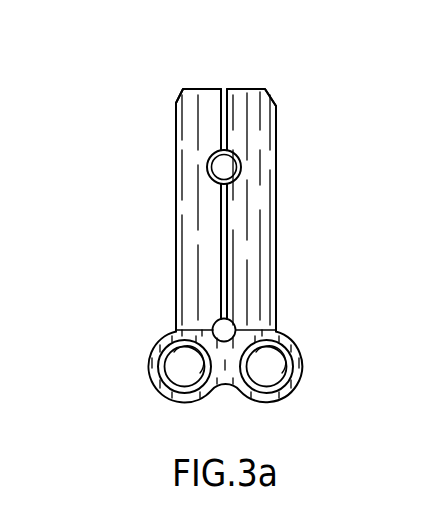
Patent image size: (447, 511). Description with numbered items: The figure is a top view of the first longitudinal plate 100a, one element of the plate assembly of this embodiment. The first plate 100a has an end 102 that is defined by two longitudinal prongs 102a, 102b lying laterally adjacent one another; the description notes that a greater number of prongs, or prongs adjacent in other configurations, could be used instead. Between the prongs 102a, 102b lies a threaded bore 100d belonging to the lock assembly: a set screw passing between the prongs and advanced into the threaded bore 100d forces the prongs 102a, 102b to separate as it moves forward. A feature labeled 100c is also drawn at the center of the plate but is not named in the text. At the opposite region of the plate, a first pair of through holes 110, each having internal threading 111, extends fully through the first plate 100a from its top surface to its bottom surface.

The first longitudinal plate 100a is at (140, 250).
The central hole 100c is at (233, 165).
The threaded bore 100d is at (213, 158).
The end 102 is at (198, 178).
The longitudinal prong 102a is at (190, 110).
The longitudinal prong 102b is at (248, 118).
The first pair of through holes 110 is at (181, 373).
The internal threading 111 is at (170, 360).